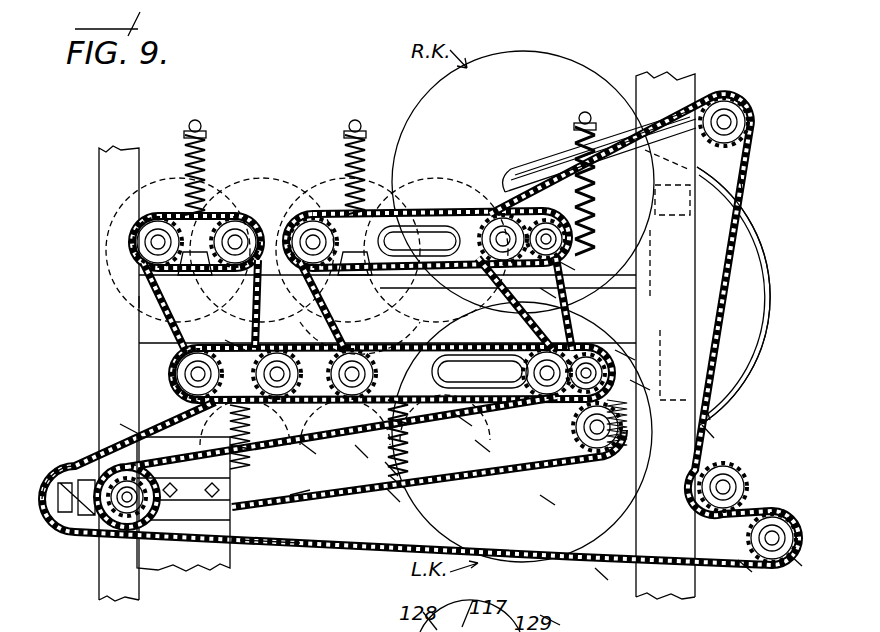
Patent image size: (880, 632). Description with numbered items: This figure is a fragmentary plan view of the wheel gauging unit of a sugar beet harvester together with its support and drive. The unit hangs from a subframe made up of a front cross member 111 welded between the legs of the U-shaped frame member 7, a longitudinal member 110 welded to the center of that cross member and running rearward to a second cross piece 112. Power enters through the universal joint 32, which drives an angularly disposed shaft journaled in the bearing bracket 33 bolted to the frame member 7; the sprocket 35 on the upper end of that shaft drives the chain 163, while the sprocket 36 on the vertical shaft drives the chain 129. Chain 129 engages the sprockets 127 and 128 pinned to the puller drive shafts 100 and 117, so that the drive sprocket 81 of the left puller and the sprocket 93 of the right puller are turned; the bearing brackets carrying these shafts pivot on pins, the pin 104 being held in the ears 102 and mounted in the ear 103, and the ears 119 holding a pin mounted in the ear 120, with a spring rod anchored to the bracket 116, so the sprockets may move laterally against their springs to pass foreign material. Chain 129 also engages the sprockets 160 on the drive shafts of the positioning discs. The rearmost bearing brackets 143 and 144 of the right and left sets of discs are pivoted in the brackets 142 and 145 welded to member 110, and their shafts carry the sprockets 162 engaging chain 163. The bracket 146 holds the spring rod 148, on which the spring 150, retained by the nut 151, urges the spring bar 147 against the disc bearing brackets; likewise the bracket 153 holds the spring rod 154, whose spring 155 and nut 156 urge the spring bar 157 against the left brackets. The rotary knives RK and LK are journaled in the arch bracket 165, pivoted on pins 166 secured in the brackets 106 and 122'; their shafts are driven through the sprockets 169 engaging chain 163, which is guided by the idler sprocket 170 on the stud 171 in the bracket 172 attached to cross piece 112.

The front cross member 111 is at (117, 148).
The cross piece 112 is at (690, 590).
The chain 129 is at (480, 477).
The sprocket 128 is at (498, 213).
The shaft 117 is at (560, 192).
The sprockets 160 is at (180, 368).
The ears 102 is at (582, 347).
The ear 103 is at (595, 325).
The shaft 100 is at (567, 518).
The sprockets 169 is at (724, 98).
The idler sprocket 170 is at (747, 518).
The sprocket 35 is at (127, 515).
The universal joint 32 is at (62, 527).
The sprocket 36 is at (67, 480).
The sprocket 93 is at (560, 172).
The sprockets 162 is at (412, 232).
The rearmost bearing bracket 143 is at (412, 226).
The bracket 145 is at (490, 357).
The bracket 142 is at (447, 302).
The bearing bracket 33 is at (188, 540).
The U-shaped frame member 7 is at (218, 562).
The chain 163 is at (273, 545).
The pins 166 is at (745, 181).
The bracket 122' is at (756, 296).
The bracket 116 is at (570, 265).
The ear 120 is at (548, 293).
The pin 104 is at (625, 355).
The bracket 106 is at (640, 385).
The arch bracket 165 is at (708, 432).
The bracket 172 is at (745, 566).
The stud 171 is at (796, 560).
The longitudinal member 110 is at (139, 302).
The bracket 146 is at (235, 345).
The spring bar 147 is at (200, 403).
The spring rod 148 is at (130, 429).
The rearmost bearing bracket 144 is at (462, 420).
The spring bar 157 is at (482, 447).
The spring 150 is at (308, 448).
The nut 151 is at (298, 482).
The bracket 153 is at (360, 452).
The spring 155 is at (390, 470).
The nut 156 is at (392, 495).
The spring rod 154 is at (397, 482).
The drive sprocket 81 is at (541, 505).
The sprocket 127 is at (600, 575).
The ears 119 is at (563, 622).